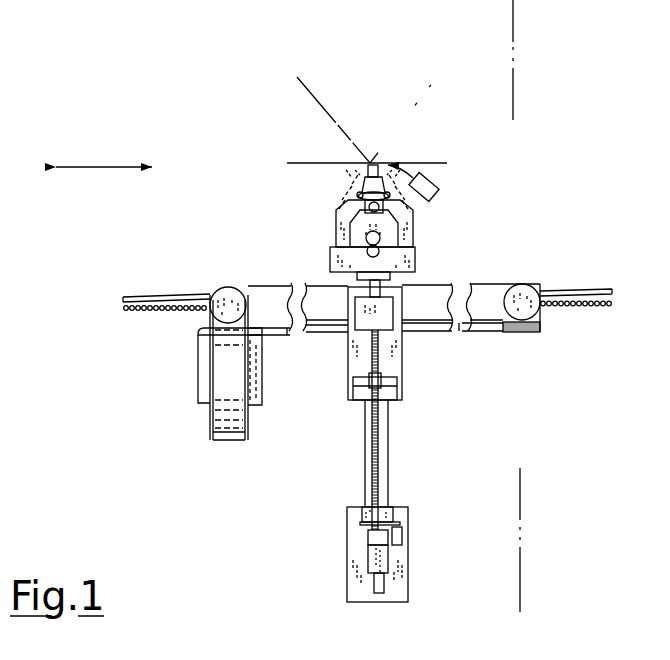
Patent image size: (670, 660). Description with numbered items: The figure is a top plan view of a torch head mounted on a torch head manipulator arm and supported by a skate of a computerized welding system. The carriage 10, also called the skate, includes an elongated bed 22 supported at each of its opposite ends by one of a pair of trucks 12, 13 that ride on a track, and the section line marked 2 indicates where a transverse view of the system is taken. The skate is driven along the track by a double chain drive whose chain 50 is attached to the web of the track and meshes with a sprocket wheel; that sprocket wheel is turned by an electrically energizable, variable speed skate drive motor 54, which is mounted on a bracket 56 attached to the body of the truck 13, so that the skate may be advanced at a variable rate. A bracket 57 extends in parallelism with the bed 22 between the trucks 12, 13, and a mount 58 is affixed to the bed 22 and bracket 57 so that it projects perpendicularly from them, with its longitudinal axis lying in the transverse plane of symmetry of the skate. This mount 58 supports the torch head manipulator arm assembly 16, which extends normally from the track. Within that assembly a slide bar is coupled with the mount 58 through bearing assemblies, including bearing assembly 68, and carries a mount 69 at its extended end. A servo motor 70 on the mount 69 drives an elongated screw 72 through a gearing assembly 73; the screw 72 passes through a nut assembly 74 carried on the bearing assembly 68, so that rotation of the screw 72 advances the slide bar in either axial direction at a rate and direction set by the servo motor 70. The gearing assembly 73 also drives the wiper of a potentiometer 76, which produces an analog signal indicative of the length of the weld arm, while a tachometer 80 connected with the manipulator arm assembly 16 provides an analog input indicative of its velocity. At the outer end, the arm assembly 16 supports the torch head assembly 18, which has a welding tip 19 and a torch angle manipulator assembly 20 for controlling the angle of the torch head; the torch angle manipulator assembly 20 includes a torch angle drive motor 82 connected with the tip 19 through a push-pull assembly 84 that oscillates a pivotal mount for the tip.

The section line 2- 2 is at (522, 612).
The carriage 10 is at (279, 270).
The truck 12 is at (526, 338).
The truck 13 is at (199, 317).
The torch head manipulator arm assembly 16 is at (397, 458).
The torch head assembly 18 is at (342, 180).
The welding tip 19 is at (373, 163).
The torch angle manipulator assembly 20 is at (440, 243).
The elongated bed 22 is at (320, 314).
The chain 50 is at (600, 307).
The skate drive motor 54 is at (202, 385).
The bracket 56 is at (201, 350).
The bracket 57 is at (482, 332).
The mount 58 is at (398, 362).
The bearing assembly 68 is at (390, 396).
The mount 69 is at (394, 519).
The servo motor 70 is at (389, 560).
The screw 72 is at (377, 483).
The gearing assembly 73 is at (368, 540).
The nut assembly 74 is at (375, 385).
The potentiometer 76 is at (403, 537).
The tachometer 80 is at (378, 594).
The torch angle drive motor 82 is at (379, 242).
The push-pull assembly 84 is at (434, 228).